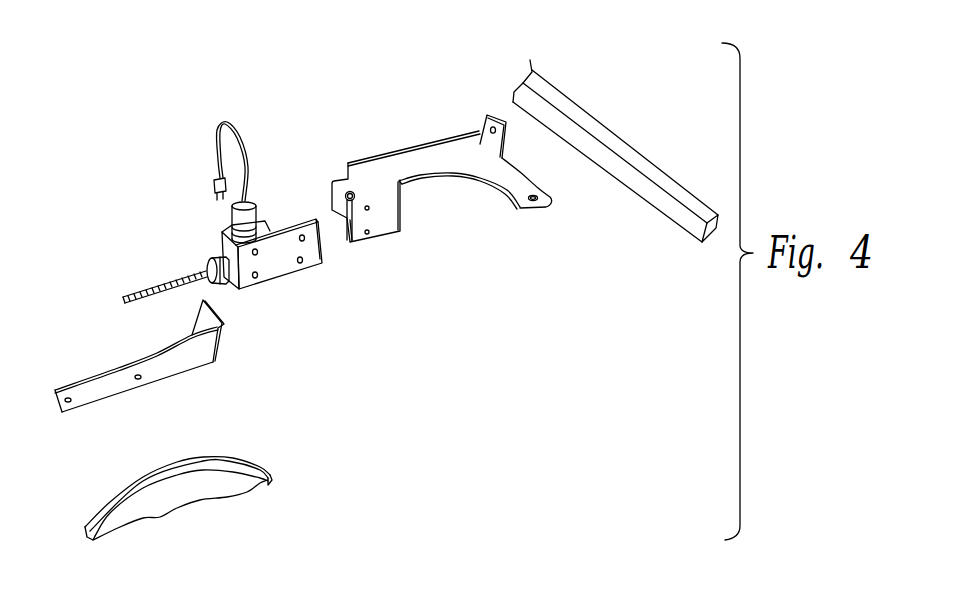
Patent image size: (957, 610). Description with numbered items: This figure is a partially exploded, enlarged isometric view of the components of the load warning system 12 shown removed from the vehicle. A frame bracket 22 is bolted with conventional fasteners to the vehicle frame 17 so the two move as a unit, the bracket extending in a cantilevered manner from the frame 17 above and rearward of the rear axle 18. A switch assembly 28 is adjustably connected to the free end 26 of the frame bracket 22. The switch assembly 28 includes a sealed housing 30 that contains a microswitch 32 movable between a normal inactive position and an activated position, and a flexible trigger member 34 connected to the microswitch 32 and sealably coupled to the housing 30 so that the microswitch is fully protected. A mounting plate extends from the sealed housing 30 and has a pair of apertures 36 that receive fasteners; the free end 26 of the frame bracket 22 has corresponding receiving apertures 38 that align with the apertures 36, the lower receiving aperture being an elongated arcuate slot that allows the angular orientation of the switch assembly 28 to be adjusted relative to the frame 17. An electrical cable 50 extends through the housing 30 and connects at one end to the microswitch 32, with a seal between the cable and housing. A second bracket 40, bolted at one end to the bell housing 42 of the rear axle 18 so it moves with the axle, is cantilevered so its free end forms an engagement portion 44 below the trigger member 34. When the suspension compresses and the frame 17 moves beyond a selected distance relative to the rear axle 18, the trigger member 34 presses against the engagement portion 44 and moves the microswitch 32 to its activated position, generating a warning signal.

The load warning system 12 is at (174, 154).
The frame 17 is at (603, 130).
The rear axle 18 is at (217, 464).
The frame bracket 22 is at (405, 142).
The free end 26 is at (345, 188).
The switch assembly 28 is at (260, 230).
The sealed housing 30 is at (224, 234).
The microswitch 32 is at (221, 247).
The flexible trigger member 34 is at (160, 290).
The apertures 36 is at (304, 240).
The receiving apertures 38 is at (369, 210).
The second bracket 40 is at (118, 370).
The bell housing 42 is at (145, 472).
The engagement portion 44 is at (218, 313).
The electrical cable 50 is at (237, 131).